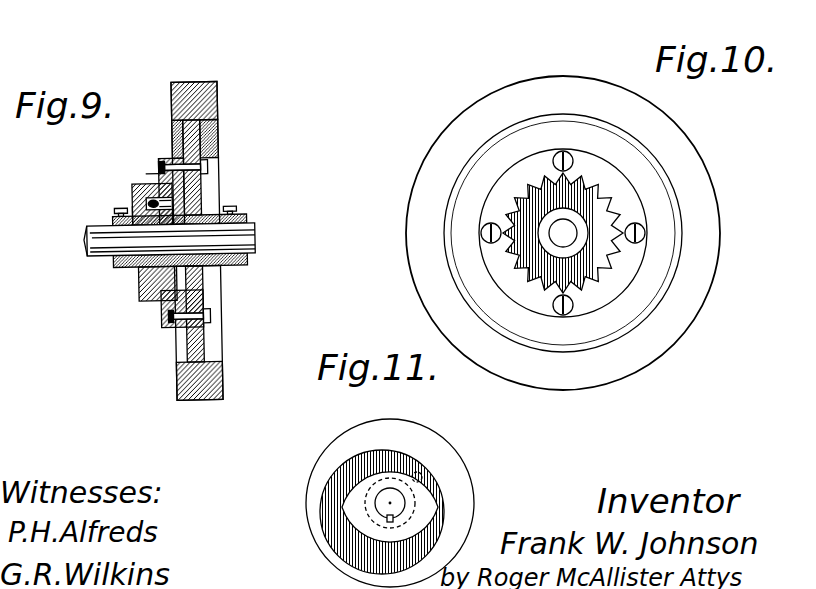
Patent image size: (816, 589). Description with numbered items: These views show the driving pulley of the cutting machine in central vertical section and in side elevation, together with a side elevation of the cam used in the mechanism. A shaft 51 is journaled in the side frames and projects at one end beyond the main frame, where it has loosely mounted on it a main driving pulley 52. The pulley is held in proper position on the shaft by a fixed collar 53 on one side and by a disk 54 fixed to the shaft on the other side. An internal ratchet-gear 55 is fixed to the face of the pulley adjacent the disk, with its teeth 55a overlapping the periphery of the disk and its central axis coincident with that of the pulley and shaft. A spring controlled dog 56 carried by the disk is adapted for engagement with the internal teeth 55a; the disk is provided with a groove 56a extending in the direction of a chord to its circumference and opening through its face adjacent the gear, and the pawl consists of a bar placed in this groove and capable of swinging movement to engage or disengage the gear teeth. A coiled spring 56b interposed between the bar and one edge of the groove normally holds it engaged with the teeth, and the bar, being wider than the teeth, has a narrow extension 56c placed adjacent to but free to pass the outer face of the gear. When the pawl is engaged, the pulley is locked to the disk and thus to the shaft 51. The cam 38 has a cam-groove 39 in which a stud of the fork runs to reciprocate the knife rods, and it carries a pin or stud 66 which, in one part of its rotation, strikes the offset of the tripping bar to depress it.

In FIG. 9, the shaft 51 is at (97, 233).
In FIG. 9, the main driving pulley 52 is at (208, 104).
In FIG. 10, the main driving pulley 52 is at (440, 157).
In FIG. 9, the fixed collar 53 is at (238, 216).
In FIG. 9, the disk 54 is at (143, 277).
In FIG. 9, the internal ratchet-gear 55 is at (188, 298).
In FIG. 10, the internal ratchet-gear 55 is at (592, 168).
In FIG. 9, the teeth 55a is at (203, 177).
In FIG. 10, the teeth 55a is at (547, 290).
In FIG. 9, the spring controlled dog 56 is at (135, 190).
In FIG. 9, the groove 56a is at (145, 203).
In FIG. 9, the coiled spring 56b is at (145, 222).
In FIG. 9, the narrow extension 56c is at (148, 170).
In FIG. 11, the cam 38 is at (447, 455).
In FIG. 11, the cam-groove 39 is at (442, 510).
In FIG. 11, the pin or stud 66 is at (423, 480).